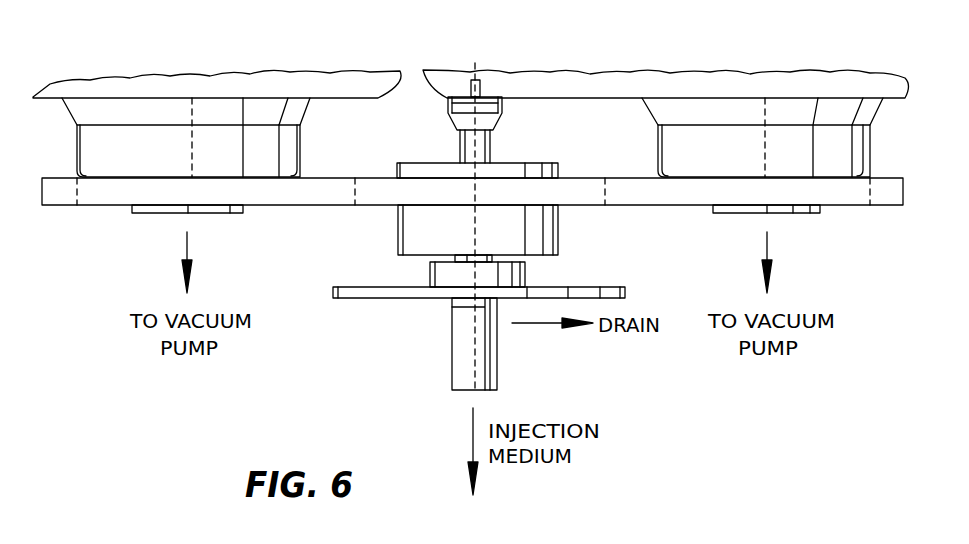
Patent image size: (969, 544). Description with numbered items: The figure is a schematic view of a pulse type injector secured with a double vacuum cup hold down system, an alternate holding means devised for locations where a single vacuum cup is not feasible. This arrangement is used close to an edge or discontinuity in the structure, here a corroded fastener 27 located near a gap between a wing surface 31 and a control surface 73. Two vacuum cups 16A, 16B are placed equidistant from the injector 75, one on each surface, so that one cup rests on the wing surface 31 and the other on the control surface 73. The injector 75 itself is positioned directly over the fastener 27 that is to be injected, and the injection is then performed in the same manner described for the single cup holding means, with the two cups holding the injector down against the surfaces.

The control surface 73 is at (211, 78).
The wing surface 31 is at (615, 78).
The corroded fastener 27 is at (475, 63).
The vacuum cup 16A is at (290, 157).
The vacuum cup 16B is at (658, 148).
The injector 75 is at (497, 364).